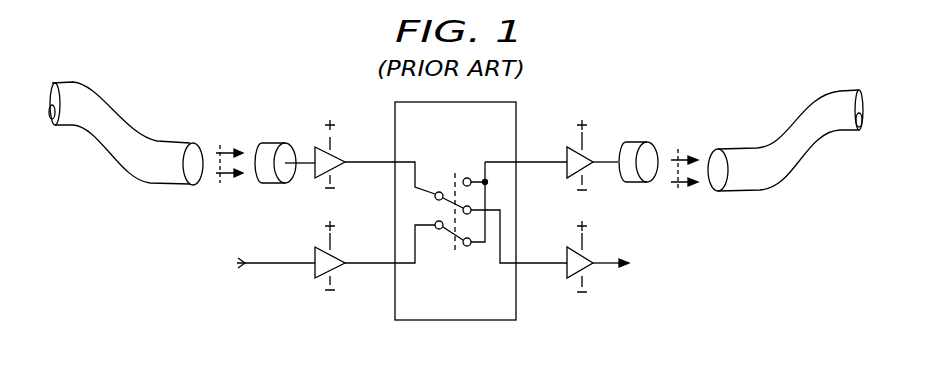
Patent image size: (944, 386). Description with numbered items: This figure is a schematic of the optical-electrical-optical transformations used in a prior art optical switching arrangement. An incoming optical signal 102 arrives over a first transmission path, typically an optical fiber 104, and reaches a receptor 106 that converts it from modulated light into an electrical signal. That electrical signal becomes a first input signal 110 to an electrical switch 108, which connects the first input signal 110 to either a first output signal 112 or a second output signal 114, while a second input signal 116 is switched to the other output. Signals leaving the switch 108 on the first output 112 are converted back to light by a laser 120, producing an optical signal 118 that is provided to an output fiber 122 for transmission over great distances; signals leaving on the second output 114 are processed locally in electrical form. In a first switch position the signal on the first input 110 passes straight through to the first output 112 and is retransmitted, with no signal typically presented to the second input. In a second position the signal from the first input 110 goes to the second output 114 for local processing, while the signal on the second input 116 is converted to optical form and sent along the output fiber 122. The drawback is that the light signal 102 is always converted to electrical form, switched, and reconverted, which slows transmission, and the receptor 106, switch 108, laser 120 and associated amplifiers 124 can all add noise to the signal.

The optical signal 102 is at (222, 142).
The optical fiber 104 is at (98, 87).
The receptor 106 is at (275, 142).
The electrical switch 108 is at (474, 302).
The first input signal 110 is at (365, 160).
The first output signal 112 is at (546, 160).
The second output signal 114 is at (546, 265).
The second input signal 116 is at (358, 268).
The optical signal 118 is at (679, 151).
The laser 120 is at (638, 140).
The output fiber 122 is at (814, 95).
The amplifiers 124 is at (337, 168).